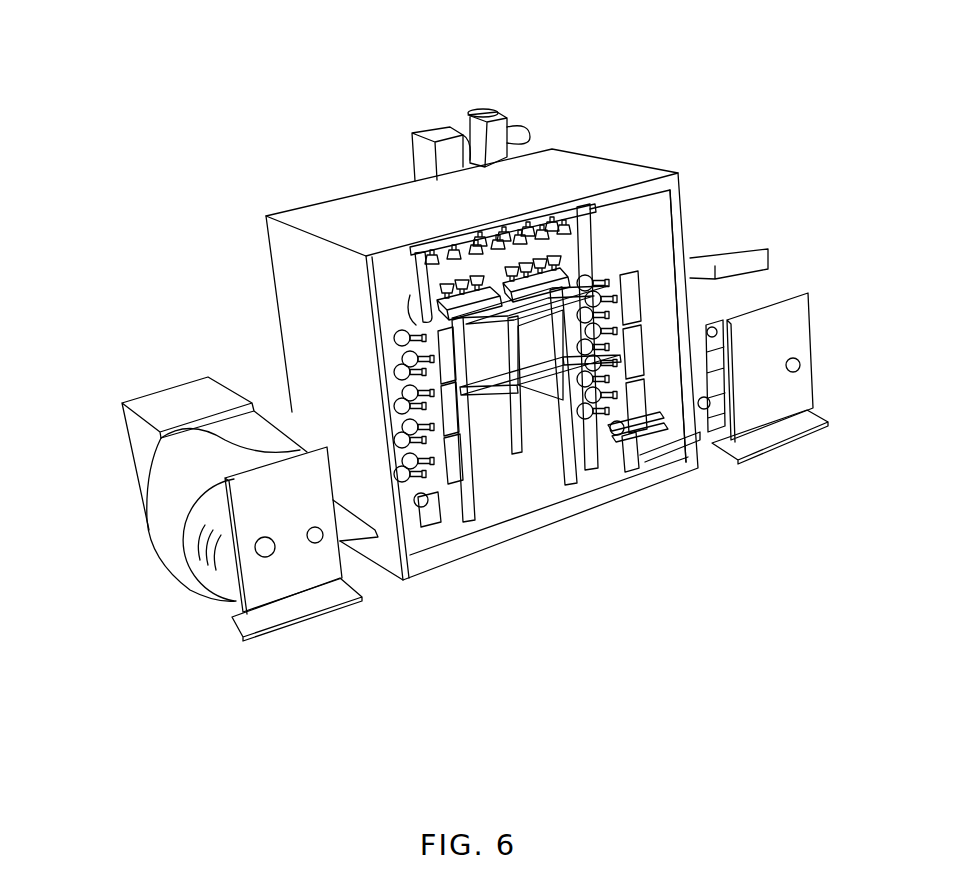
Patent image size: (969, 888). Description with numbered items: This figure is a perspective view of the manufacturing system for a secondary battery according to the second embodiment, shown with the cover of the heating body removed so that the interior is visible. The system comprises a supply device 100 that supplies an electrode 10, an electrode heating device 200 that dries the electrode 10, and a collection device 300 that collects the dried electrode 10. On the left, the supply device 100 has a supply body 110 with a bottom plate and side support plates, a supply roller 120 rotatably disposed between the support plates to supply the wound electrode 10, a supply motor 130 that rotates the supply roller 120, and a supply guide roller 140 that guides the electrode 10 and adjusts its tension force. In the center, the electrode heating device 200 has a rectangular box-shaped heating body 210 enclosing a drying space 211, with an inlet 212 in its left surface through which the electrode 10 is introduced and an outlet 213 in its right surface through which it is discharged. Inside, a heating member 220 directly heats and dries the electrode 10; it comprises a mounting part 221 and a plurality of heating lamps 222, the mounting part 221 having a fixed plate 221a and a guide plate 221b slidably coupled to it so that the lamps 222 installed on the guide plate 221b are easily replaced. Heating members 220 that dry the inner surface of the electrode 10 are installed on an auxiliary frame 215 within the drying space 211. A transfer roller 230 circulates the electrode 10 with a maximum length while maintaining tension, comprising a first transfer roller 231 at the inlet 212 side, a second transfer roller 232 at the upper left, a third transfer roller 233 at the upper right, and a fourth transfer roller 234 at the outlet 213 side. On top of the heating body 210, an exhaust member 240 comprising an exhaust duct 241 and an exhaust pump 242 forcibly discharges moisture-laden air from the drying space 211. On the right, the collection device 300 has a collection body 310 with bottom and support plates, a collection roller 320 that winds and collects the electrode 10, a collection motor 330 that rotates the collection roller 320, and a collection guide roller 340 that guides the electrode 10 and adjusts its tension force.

The electrode 10 is at (353, 528).
The supply device 100 is at (55, 437).
The supply body 110 is at (263, 600).
The supply roller 120 is at (260, 550).
The supply motor 130 is at (133, 423).
The supply guide roller 140 is at (150, 477).
The electrode heating device 200 is at (788, 788).
The heating body 210 is at (633, 170).
The drying space 211 is at (640, 233).
The inlet 212 is at (376, 537).
The outlet 213 is at (660, 442).
The auxiliary frame 215 is at (475, 508).
The heating member 220 is at (593, 577).
The mounting part 221 is at (630, 538).
The fixed plate 221a is at (648, 430).
The guide plate 221b is at (630, 433).
The heating lamps 222 is at (622, 440).
The transfer roller 230 is at (788, 662).
The first transfer roller 231 is at (427, 502).
The second transfer roller 232 is at (410, 307).
The third transfer roller 233 is at (578, 207).
The fourth transfer roller 234 is at (618, 430).
The exhaust member 240 is at (393, 42).
The exhaust duct 241 is at (433, 131).
The exhaust pump 242 is at (470, 127).
The collection device 300 is at (875, 215).
The collection body 310 is at (805, 390).
The collection roller 320 is at (793, 365).
The collection motor 330 is at (707, 268).
The collection guide roller 340 is at (712, 328).